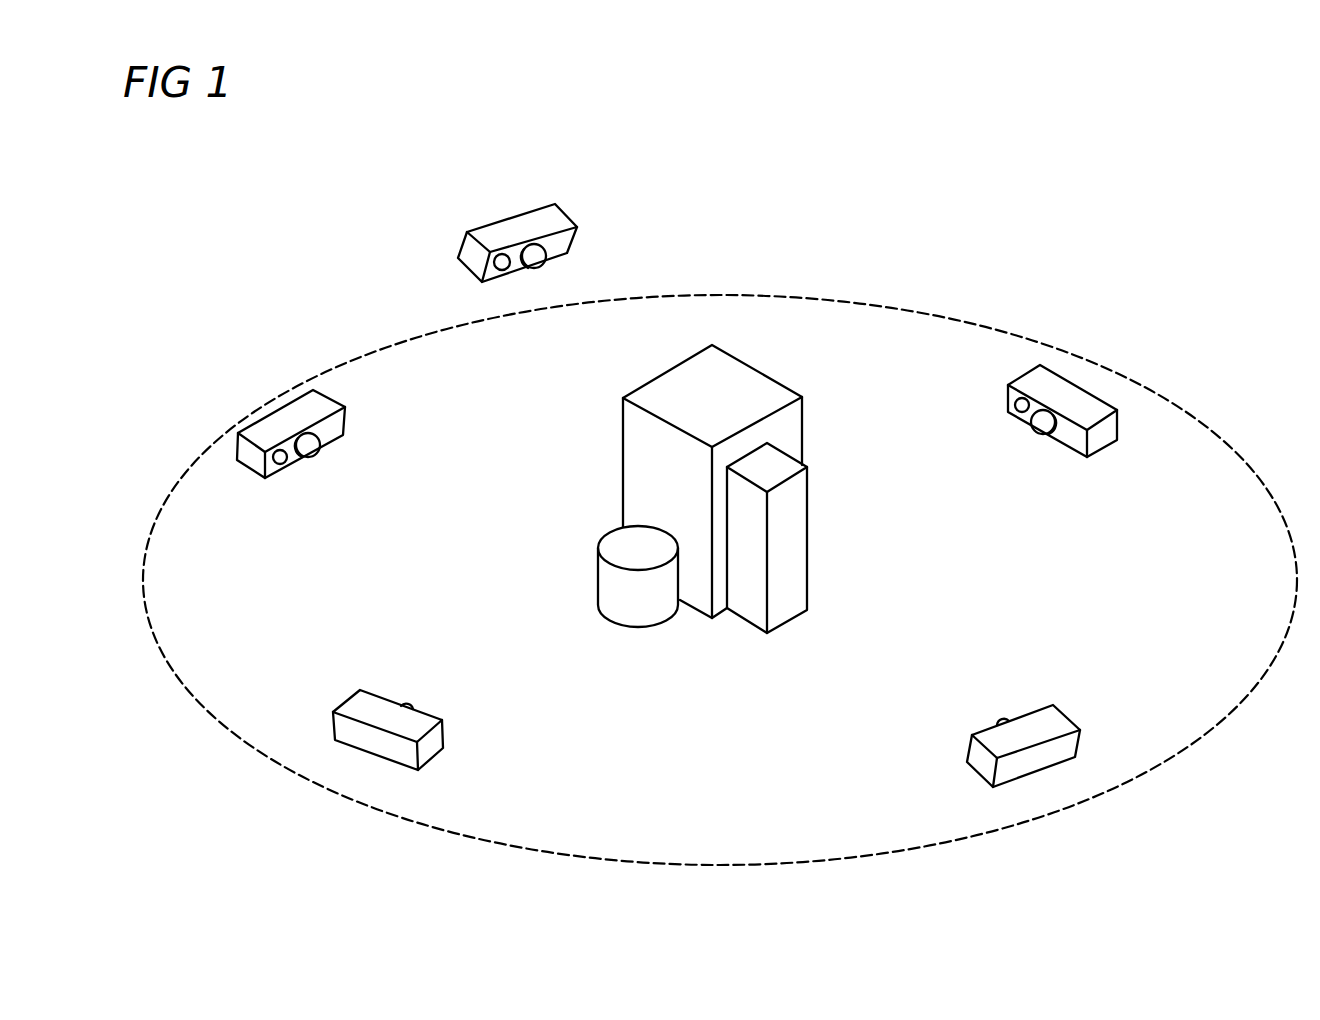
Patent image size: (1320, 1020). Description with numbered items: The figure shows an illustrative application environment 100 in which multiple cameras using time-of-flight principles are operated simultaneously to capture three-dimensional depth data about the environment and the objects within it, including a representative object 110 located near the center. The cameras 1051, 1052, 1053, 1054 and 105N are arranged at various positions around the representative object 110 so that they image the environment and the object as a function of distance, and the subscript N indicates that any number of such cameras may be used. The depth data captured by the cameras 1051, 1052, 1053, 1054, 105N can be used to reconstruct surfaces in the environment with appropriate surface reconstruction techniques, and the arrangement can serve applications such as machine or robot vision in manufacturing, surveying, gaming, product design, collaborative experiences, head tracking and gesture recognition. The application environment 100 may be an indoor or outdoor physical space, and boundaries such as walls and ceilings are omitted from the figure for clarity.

The application environment 100 is at (925, 313).
The representative object 110 is at (803, 412).
The camera 1051 is at (577, 227).
The camera 1052 is at (345, 420).
The camera 1053 is at (443, 733).
The camera 1054 is at (1078, 722).
The camera 105N is at (1117, 428).